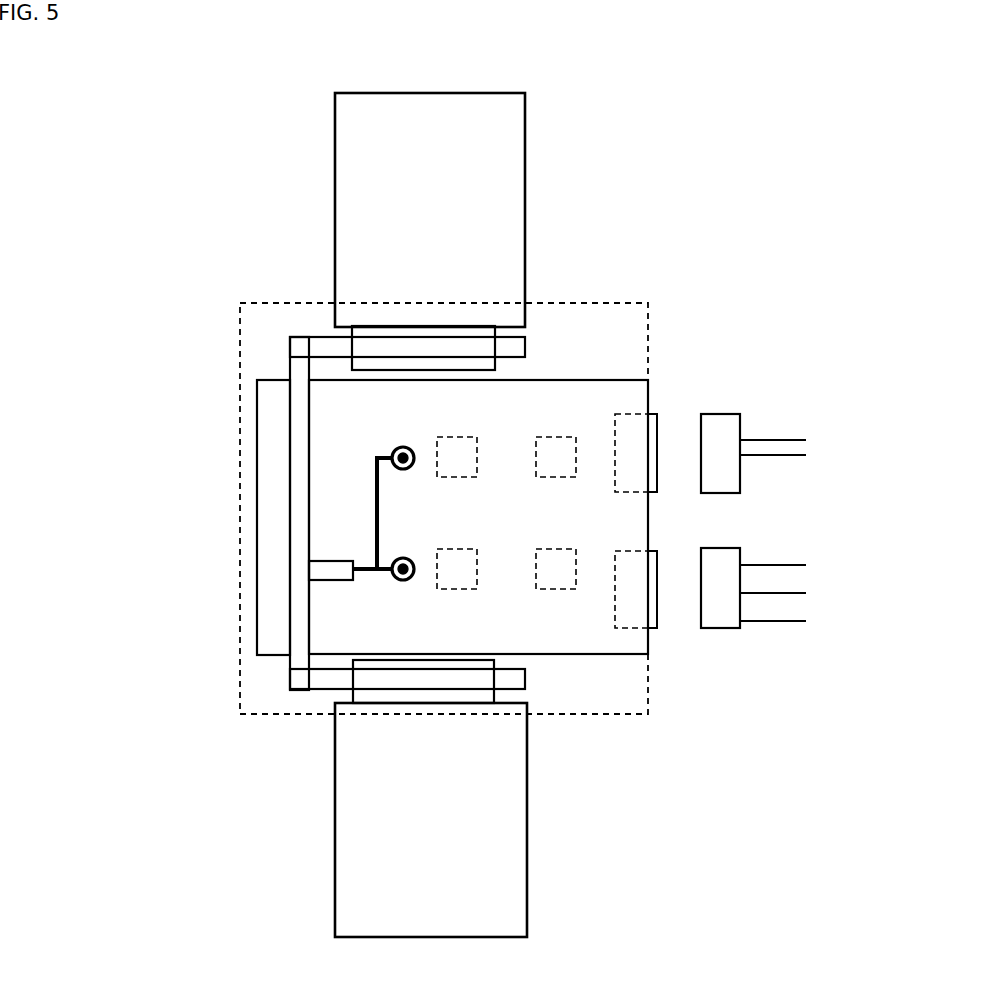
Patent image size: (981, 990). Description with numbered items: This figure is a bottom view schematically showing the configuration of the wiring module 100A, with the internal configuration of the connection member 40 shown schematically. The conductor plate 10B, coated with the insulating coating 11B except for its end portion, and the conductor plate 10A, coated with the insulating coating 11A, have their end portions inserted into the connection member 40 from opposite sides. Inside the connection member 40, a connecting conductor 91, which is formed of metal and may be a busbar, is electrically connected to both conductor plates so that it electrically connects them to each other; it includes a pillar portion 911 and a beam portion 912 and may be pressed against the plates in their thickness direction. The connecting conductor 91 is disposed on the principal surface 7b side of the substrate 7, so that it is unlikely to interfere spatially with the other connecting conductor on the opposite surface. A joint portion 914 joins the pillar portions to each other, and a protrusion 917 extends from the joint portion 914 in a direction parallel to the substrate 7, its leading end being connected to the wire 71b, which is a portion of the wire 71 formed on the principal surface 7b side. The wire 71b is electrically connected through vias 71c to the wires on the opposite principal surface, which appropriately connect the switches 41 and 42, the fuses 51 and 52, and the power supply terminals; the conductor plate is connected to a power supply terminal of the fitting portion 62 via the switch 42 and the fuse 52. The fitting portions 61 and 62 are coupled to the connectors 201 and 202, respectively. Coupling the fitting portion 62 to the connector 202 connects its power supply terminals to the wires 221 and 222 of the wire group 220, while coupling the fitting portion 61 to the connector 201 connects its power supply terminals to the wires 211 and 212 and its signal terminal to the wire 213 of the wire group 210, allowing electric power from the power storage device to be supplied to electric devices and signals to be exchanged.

The wiring module 100A is at (636, 170).
The insulating coating 11B is at (525, 222).
The conductor plate 10B is at (483, 332).
The connection member 40 is at (648, 302).
The substrate 7 is at (612, 382).
The principal surface 7b is at (582, 382).
The connecting conductor 91 is at (295, 437).
The pillar portion 911 is at (298, 349).
The beam portion 912 is at (325, 343).
The joint portion 914 is at (290, 505).
The protrusion 917 is at (342, 568).
The wire 71 is at (370, 582).
The wire 71b is at (373, 484).
The via 71c is at (403, 444).
The fuse 52 is at (457, 446).
The switch 42 is at (551, 446).
The switch 41 is at (457, 556).
The fuse 51 is at (551, 556).
The fitting portion 62 is at (657, 431).
The fitting portion 61 is at (657, 573).
The conductor plate 10A is at (473, 698).
The insulating coating 11A is at (527, 777).
The wire group 220 is at (789, 368).
The connector 202 is at (718, 421).
The wire 222 is at (774, 438).
The wire 221 is at (774, 458).
The wire group 210 is at (792, 558).
The connector 201 is at (720, 556).
The wire 211 is at (766, 563).
The wire 212 is at (795, 591).
The wire 213 is at (775, 623).